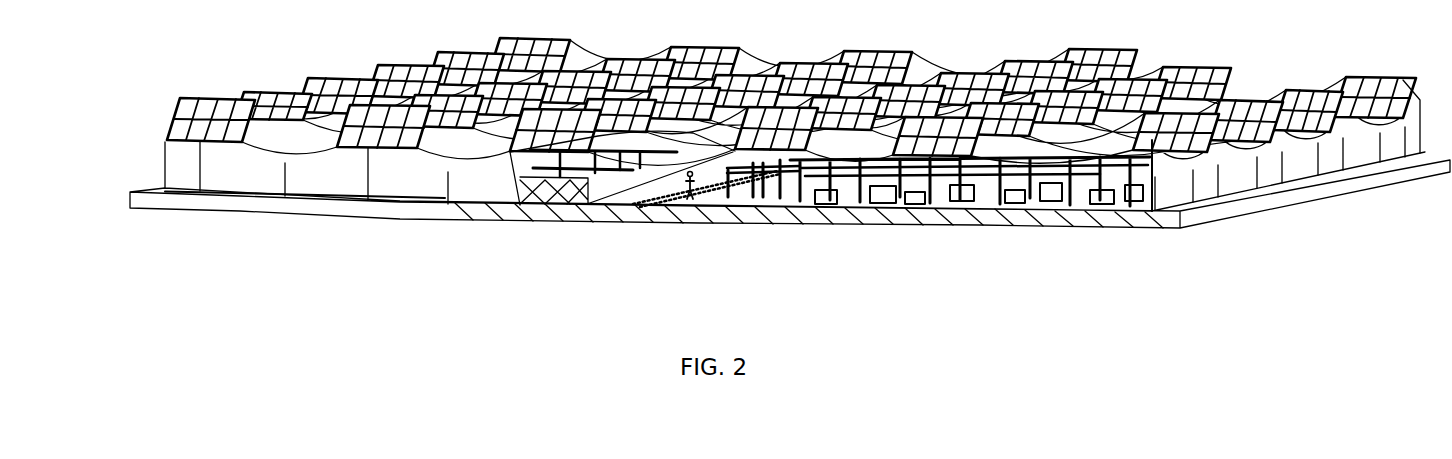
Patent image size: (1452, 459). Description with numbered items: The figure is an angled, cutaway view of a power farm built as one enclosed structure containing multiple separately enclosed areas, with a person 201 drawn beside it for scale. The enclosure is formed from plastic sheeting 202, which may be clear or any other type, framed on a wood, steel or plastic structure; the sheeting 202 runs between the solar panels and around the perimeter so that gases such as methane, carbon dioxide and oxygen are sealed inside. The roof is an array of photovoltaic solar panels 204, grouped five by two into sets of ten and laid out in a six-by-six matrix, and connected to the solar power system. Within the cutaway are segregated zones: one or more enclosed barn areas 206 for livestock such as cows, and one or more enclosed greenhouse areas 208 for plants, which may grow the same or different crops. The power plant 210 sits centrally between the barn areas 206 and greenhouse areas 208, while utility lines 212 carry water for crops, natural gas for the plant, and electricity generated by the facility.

The person 201 is at (687, 200).
The plastic sheeting 202 is at (163, 153).
The photovoltaic solar panels 204 is at (186, 112).
The barn areas 206 is at (907, 190).
The greenhouse areas 208 is at (605, 172).
The power plant 210 is at (779, 186).
The utility lines 212 is at (740, 205).